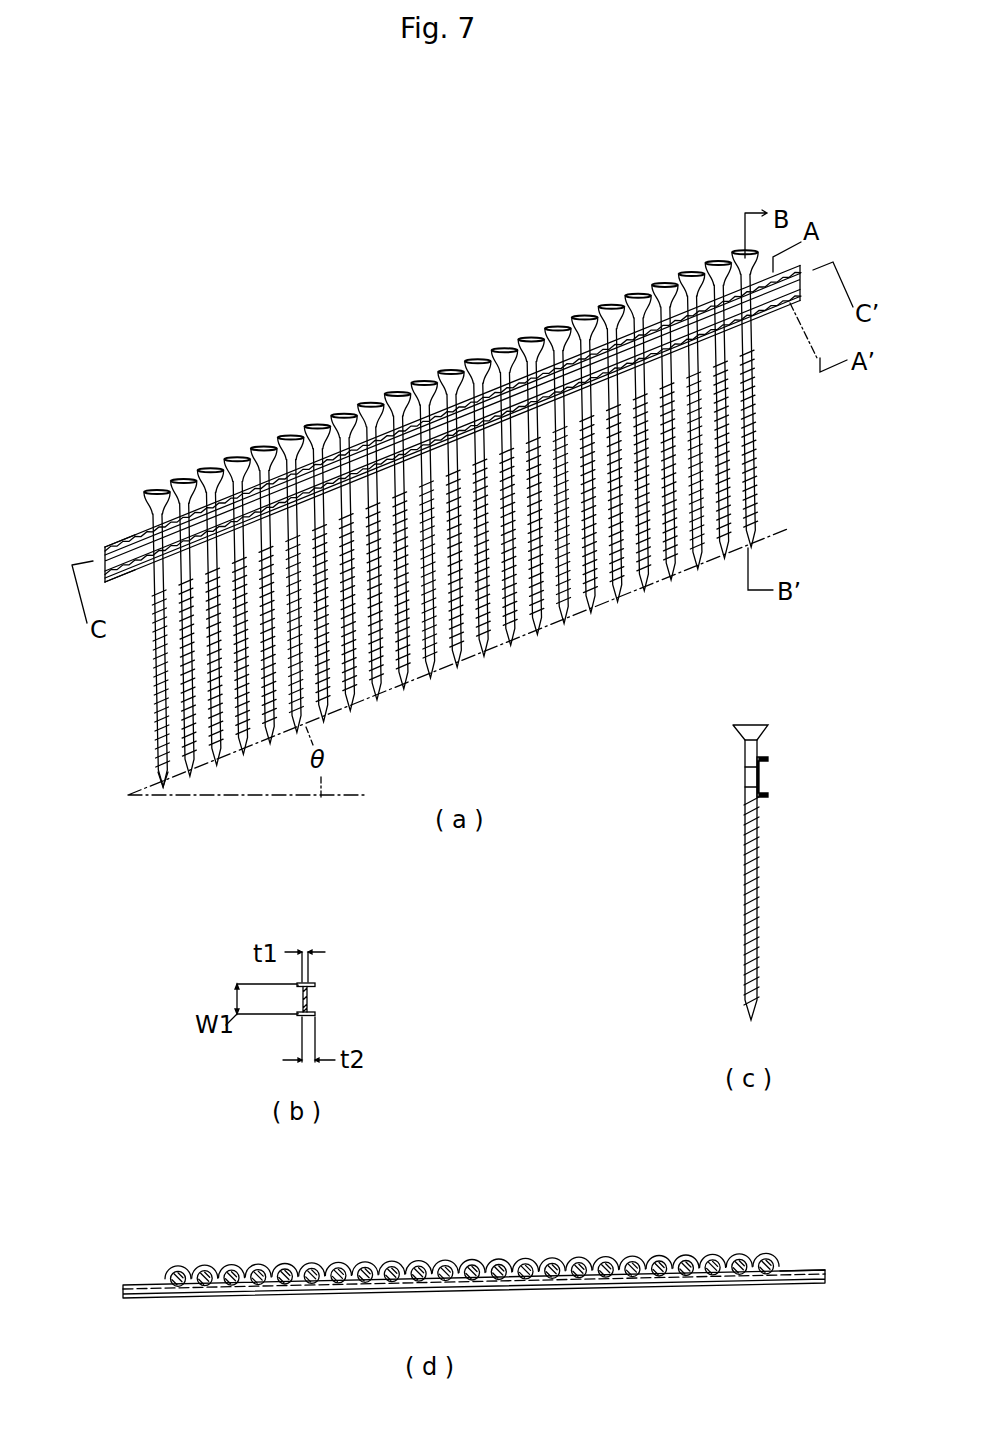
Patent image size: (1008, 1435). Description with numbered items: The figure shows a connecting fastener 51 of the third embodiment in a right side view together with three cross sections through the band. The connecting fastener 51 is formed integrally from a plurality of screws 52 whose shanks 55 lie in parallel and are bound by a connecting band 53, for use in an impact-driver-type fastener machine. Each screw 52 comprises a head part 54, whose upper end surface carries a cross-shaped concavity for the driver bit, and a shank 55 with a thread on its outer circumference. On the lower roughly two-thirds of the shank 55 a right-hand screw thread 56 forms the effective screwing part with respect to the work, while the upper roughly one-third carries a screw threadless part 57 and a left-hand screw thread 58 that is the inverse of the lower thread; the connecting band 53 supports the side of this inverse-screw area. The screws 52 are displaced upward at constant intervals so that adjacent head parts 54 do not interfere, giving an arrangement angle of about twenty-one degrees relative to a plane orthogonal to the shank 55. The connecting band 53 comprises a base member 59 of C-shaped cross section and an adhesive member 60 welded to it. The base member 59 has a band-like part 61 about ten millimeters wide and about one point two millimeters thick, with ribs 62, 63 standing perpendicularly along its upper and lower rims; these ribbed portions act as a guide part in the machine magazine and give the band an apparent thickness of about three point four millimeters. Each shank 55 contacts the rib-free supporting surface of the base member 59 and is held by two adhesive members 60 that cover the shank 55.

The connecting fastener 51 is at (205, 325).
The screw 52 is at (432, 676).
The connecting band 53 is at (768, 318).
The head part 54 is at (163, 489).
The shank 55 is at (748, 968).
The screw thread (right-hand screw) 56 is at (158, 710).
The screw threadless part 57 is at (153, 582).
The screw thread (left-hand screw) 58 is at (148, 532).
The base member 59 is at (762, 775).
The adhesive member 60 is at (120, 567).
The band-like part 61 is at (310, 998).
The rib 62 is at (314, 985).
The rib 63 is at (315, 1014).